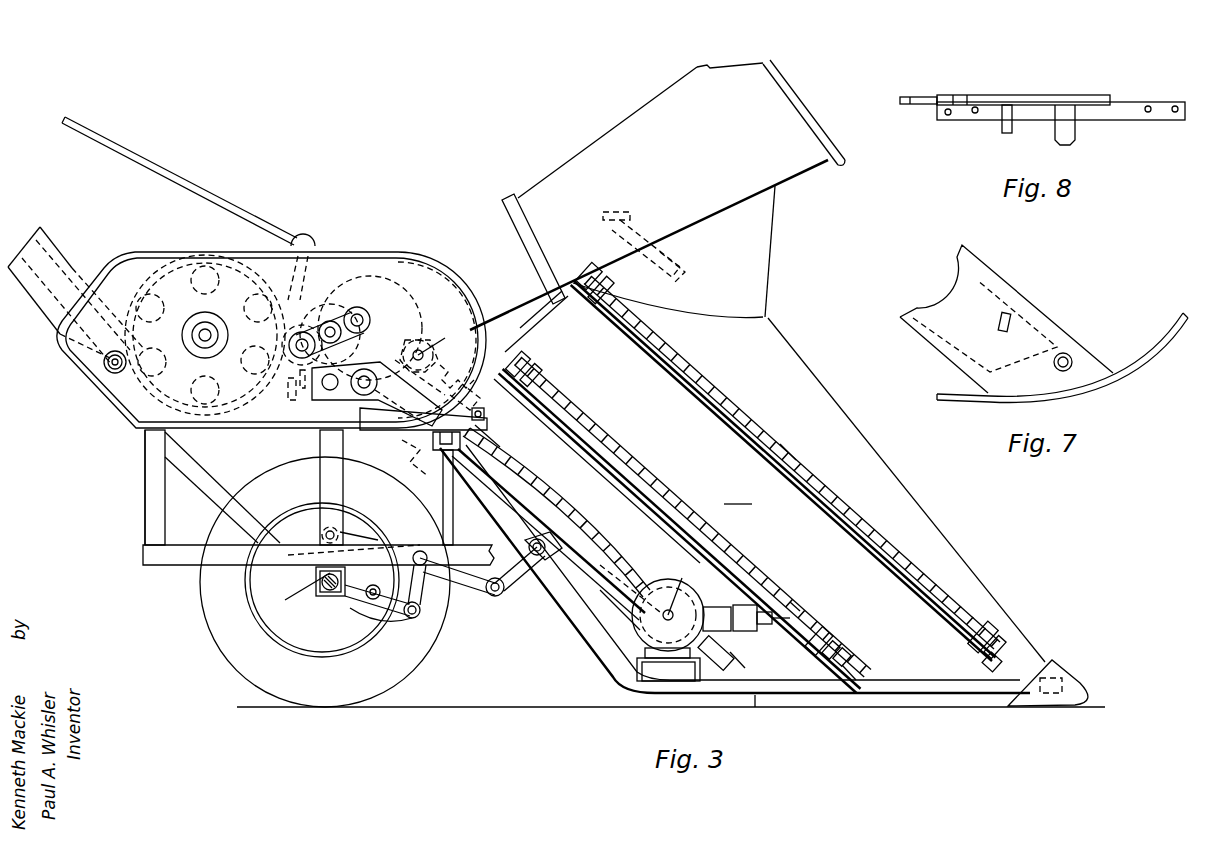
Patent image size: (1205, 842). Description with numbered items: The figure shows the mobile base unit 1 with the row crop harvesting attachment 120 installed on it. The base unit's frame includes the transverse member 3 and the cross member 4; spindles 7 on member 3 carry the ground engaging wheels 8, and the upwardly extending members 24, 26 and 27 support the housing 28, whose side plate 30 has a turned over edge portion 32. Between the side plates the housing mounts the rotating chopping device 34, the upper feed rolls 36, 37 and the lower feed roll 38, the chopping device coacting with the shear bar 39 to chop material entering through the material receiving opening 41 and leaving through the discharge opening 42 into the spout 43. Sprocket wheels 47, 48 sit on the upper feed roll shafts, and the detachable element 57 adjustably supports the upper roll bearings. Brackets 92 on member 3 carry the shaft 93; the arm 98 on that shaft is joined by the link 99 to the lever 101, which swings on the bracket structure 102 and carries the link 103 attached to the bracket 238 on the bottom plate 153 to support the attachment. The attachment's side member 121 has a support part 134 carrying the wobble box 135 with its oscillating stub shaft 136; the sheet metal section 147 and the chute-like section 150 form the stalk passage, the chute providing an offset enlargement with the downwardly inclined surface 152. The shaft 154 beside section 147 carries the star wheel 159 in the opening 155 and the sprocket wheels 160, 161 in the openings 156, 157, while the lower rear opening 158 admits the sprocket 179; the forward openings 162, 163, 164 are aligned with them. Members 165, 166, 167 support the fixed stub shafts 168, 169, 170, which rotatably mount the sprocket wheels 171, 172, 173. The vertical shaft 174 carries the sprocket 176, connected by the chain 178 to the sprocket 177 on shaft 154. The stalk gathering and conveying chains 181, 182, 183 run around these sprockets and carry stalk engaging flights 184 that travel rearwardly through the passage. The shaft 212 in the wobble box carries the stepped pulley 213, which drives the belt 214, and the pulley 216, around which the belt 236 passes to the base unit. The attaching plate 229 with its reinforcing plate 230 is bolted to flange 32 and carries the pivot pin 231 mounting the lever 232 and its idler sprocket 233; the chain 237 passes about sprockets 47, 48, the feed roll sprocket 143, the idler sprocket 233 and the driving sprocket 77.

In FIG. 3, the mobile base unit 1 is at (236, 470).
In FIG. 3, the transverse frame member 3 is at (318, 596).
In FIG. 3, the cross member 4 is at (170, 566).
In FIG. 3, the spindle 7 is at (303, 592).
In FIG. 3, the ground engaging wheel 8 is at (204, 618).
In FIG. 3, the upwardly extending member 24 is at (143, 478).
In FIG. 3, the upwardly extending member 26 is at (212, 496).
In FIG. 3, the upwardly extending member 27 is at (436, 532).
In FIG. 3, the housing 28 is at (140, 287).
In FIG. 3, the side plate member 30 is at (100, 380).
In FIG. 3, the turned over edge portion 32 is at (430, 262).
In FIG. 3, the rotating chopping device 34 is at (190, 278).
In FIG. 3, the upper feed roll 36 is at (300, 332).
In FIG. 3, the upper feed roll 37 is at (345, 290).
In FIG. 3, the lower feed roll 38 is at (330, 374).
In FIG. 3, the shear bar 39 is at (290, 390).
In FIG. 3, the material receiving opening 41 is at (248, 368).
In FIG. 3, the material discharge opening 42 is at (152, 355).
In FIG. 3, the spout 43 is at (62, 252).
In FIG. 3, the sprocket wheel 47 is at (275, 290).
In FIG. 3, the sprocket wheel 48 is at (368, 300).
In FIG. 3, the detachable element 57 is at (358, 332).
In FIG. 3, the driving sprocket 77 is at (428, 345).
In FIG. 3, the rigid bracket 92 is at (345, 598).
In FIG. 3, the shaft 93 is at (380, 590).
In FIG. 3, the arm 98 is at (388, 620).
In FIG. 3, the link 99 is at (420, 605).
In FIG. 3, the lever 101 is at (378, 532).
In FIG. 3, the bracket structure 102 is at (298, 556).
In FIG. 3, the link 103 is at (504, 597).
In FIG. 3, the row crop harvesting attachment 120 is at (739, 494).
In FIG. 3, the side member 121 is at (930, 672).
In FIG. 3, the support part 134 is at (625, 684).
In FIG. 3, the wobble box 135 is at (668, 664).
In FIG. 3, the oscillating stub shaft 136 is at (792, 602).
In FIG. 3, the sprocket 143 is at (355, 400).
In FIG. 3, the sheet metal section 147 is at (890, 470).
In FIG. 3, the chute-like sheet metal section 150 is at (822, 136).
In FIG. 3, the downwardly inclined surface 152 is at (700, 218).
In FIG. 3, the bottom plate 153 is at (553, 490).
In FIG. 3, the shaft 154 is at (558, 330).
In FIG. 3, the opening 155 is at (684, 266).
In FIG. 3, the opening 156 is at (608, 290).
In FIG. 3, the opening 157 is at (537, 378).
In FIG. 3, the opening 158 is at (490, 432).
In FIG. 3, the star wheel 159 is at (630, 206).
In FIG. 3, the sprocket wheel 160 is at (588, 268).
In FIG. 3, the sprocket wheel 161 is at (530, 360).
In FIG. 3, the opening 162 is at (1036, 666).
In FIG. 3, the opening 163 is at (858, 672).
In FIG. 3, the opening 164 is at (758, 700).
In FIG. 3, the longitudinally extending member 165 is at (740, 446).
In FIG. 3, the longitudinally extending member 166 is at (614, 480).
In FIG. 3, the longitudinally extending member 167 is at (642, 518).
In FIG. 3, the fixed stub shaft 168 is at (1005, 640).
In FIG. 3, the fixed stub shaft 169 is at (830, 636).
In FIG. 3, the fixed stub shaft 170 is at (734, 640).
In FIG. 3, the sprocket wheel 171 is at (985, 660).
In FIG. 3, the sprocket wheel 172 is at (846, 652).
In FIG. 3, the sprocket wheel 173 is at (748, 662).
In FIG. 3, the vertical shaft 174 is at (425, 378).
In FIG. 3, the sprocket 176 is at (450, 368).
In FIG. 3, the sprocket 177 is at (486, 414).
In FIG. 3, the chain 178 is at (472, 392).
In FIG. 3, the sprocket 179 is at (412, 355).
In FIG. 3, the stalk gathering and conveying chain 181 is at (826, 468).
In FIG. 3, the stalk gathering and conveying chain 182 is at (752, 566).
In FIG. 3, the stalk gathering and conveying chain 183 is at (634, 498).
In FIG. 3, the stalk engaging flight 184 is at (775, 444).
In FIG. 3, the shaft 212 is at (669, 601).
In FIG. 3, the stepped pulley 213 is at (645, 636).
In FIG. 3, the belt 214 is at (598, 586).
In FIG. 3, the pulley 216 is at (700, 604).
In FIG. 3, the attaching plate 229 is at (362, 416).
In FIG. 8, the attaching plate 229 is at (924, 108).
In FIG. 7, the attaching plate 229 is at (1020, 304).
In FIG. 8, the reinforcing plate 230 is at (1030, 88).
In FIG. 7, the reinforcing plate 230 is at (958, 352).
In FIG. 8, the pivot pin 231 is at (1078, 137).
In FIG. 7, the pivot pin 231 is at (1070, 356).
In FIG. 3, the lever 232 is at (440, 470).
In FIG. 3, the idler sprocket 233 is at (430, 440).
In FIG. 3, the belt 236 is at (640, 545).
In FIG. 3, the chain 237 is at (324, 306).
In FIG. 3, the bracket 238 is at (552, 556).